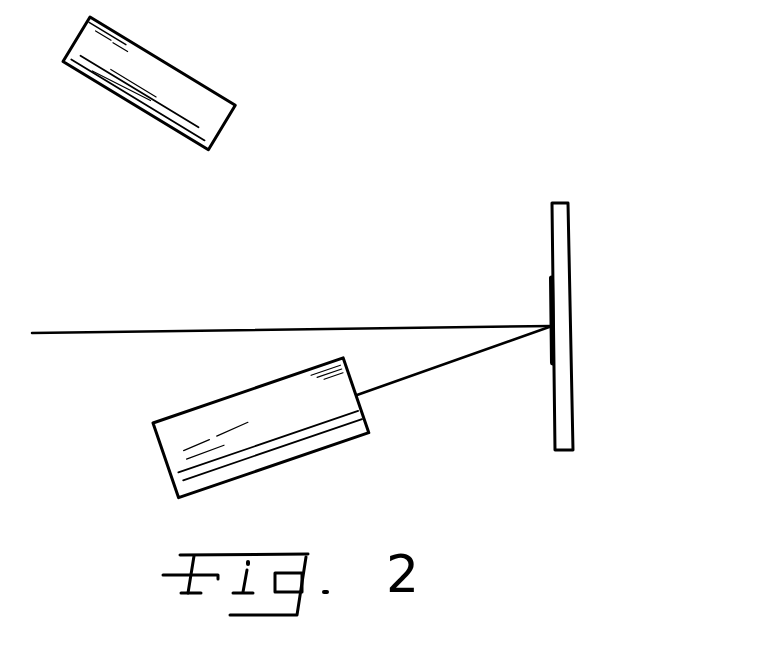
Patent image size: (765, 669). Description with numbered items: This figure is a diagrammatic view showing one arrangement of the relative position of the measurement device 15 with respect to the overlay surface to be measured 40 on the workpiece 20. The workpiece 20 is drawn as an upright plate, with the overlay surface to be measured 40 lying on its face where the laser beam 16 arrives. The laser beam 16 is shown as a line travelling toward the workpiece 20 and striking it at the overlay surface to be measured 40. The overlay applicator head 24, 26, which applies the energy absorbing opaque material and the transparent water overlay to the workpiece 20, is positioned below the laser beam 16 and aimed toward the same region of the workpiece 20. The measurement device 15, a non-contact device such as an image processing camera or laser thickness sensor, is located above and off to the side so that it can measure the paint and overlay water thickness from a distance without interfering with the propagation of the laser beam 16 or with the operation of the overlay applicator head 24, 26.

The measurement device 15 is at (185, 82).
The laser beam 16 is at (180, 328).
The workpiece 20 is at (562, 243).
The overlay surface to be measured 40 is at (549, 288).
The material applicator 24 is at (284, 429).
The transparent overlay applicator 26 is at (273, 443).